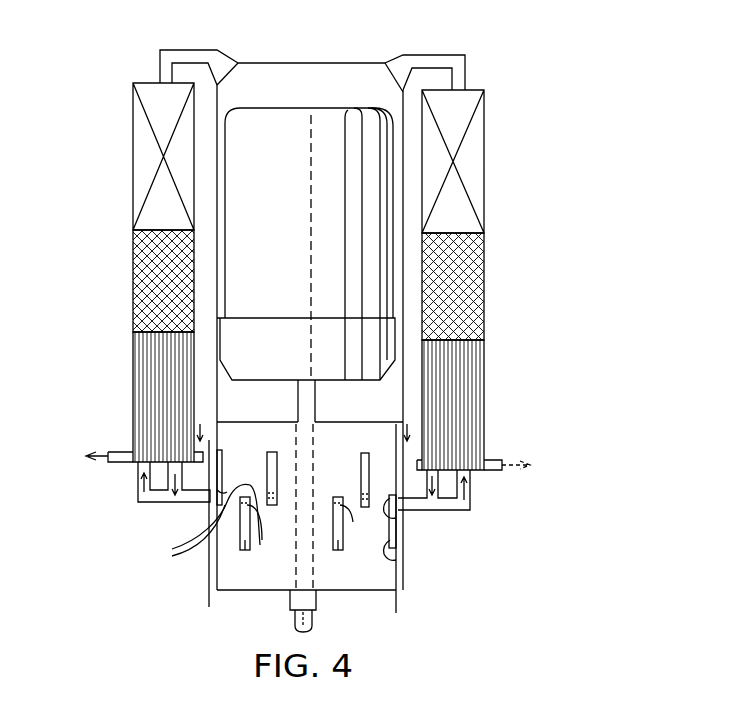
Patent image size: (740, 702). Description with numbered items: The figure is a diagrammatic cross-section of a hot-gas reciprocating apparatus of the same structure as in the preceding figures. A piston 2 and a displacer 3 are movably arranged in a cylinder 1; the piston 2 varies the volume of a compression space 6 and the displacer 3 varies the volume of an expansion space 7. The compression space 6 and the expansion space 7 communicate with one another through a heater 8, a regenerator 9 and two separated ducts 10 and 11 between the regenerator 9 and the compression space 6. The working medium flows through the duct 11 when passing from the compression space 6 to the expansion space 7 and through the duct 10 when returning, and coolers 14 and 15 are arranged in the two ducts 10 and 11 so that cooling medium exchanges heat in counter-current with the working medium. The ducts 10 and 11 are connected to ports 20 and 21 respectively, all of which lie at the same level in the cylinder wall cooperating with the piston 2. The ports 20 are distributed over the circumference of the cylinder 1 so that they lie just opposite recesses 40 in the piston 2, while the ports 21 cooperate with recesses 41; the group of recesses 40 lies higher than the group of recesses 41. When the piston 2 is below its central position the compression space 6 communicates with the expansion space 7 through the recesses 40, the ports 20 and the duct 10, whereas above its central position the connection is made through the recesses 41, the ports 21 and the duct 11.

The cylinder 1 is at (403, 210).
The piston 2 is at (362, 582).
The displacer 3 is at (288, 123).
The compression space 6 is at (255, 404).
The expansion space 7 is at (345, 83).
The heater 8 is at (143, 160).
The regenerator 9 is at (142, 277).
The duct 10 is at (198, 470).
The duct 11 is at (138, 484).
The cooler 14 is at (180, 402).
The cooler 15 is at (140, 378).
The ports 20 is at (364, 498).
The ports 21 is at (258, 547).
The recesses 40 is at (222, 458).
The recesses 41 is at (243, 550).